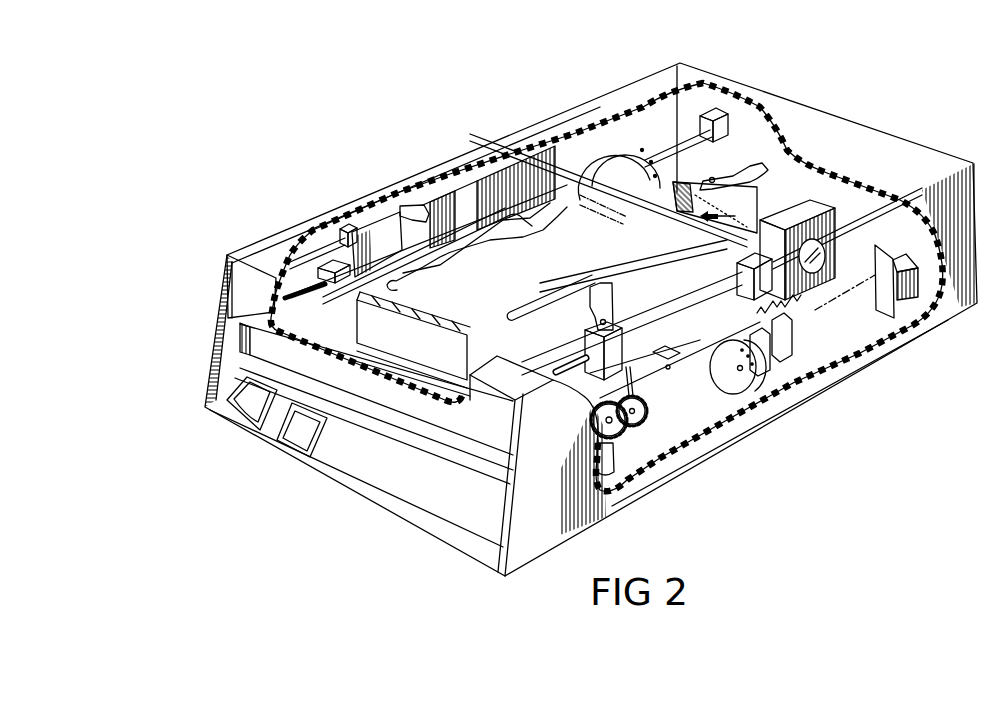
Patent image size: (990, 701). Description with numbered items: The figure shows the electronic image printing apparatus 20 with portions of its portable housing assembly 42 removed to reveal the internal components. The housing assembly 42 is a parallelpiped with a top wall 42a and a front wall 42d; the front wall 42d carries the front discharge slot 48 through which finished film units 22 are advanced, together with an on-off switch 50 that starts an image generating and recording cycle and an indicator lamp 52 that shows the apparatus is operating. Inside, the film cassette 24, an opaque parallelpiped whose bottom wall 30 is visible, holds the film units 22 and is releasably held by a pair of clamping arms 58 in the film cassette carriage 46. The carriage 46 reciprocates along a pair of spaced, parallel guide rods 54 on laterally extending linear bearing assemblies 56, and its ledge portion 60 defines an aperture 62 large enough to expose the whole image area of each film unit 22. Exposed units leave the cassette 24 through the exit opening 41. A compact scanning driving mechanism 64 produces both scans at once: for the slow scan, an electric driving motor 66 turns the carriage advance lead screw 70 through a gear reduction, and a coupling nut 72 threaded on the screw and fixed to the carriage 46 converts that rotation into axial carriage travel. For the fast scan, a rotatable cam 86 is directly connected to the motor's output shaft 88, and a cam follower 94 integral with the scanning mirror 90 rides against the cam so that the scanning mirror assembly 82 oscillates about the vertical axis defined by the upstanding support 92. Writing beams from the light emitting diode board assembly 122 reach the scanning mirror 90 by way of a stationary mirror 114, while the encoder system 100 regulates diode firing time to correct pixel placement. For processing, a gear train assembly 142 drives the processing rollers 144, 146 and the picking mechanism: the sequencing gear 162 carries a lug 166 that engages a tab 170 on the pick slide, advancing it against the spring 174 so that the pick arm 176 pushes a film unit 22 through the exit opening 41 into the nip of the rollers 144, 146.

The electronic image printing apparatus 20 is at (396, 110).
The film units 22 is at (508, 262).
The film cassette 24 is at (466, 317).
The bottom wall 30 is at (502, 350).
The exit opening 41 is at (434, 373).
The portable housing assembly 42 is at (910, 127).
The top wall 42a is at (766, 100).
The front wall 42d is at (440, 522).
The film cassette carriage 46 is at (503, 165).
The front discharge slot 48 is at (396, 458).
The on-off switch 50 is at (247, 401).
The indicator lamp 52 is at (296, 434).
The guide rods 54 is at (303, 255).
The linear bearing assemblies 56 is at (498, 150).
The clamping arms 58 is at (415, 204).
The ledge portion 60 is at (532, 206).
The aperture 62 is at (398, 289).
The scanning driving mechanism 64 is at (616, 98).
The electric driving motor 66 is at (578, 128).
The carriage advance lead screw 70 is at (276, 285).
The coupling nut 72 is at (365, 265).
The scanning mirror assembly 82 is at (756, 150).
The rotatable cam 86 is at (612, 172).
The output shaft 88 is at (628, 182).
The scanning mirror 90 is at (758, 214).
The upstanding support 92 is at (750, 180).
The cam follower 94 is at (672, 188).
The encoder system 100 is at (693, 98).
The stationary mirror 114 is at (876, 266).
The light emitting diode board assembly 122 is at (823, 203).
The gear train assembly 142 is at (636, 474).
The processing roller 144 is at (228, 318).
The processing roller 146 is at (242, 349).
The sequencing gear 162 is at (637, 431).
The lug 166 is at (655, 416).
The tab 170 is at (638, 376).
The spring 174 is at (794, 302).
The pick arm 176 is at (690, 358).